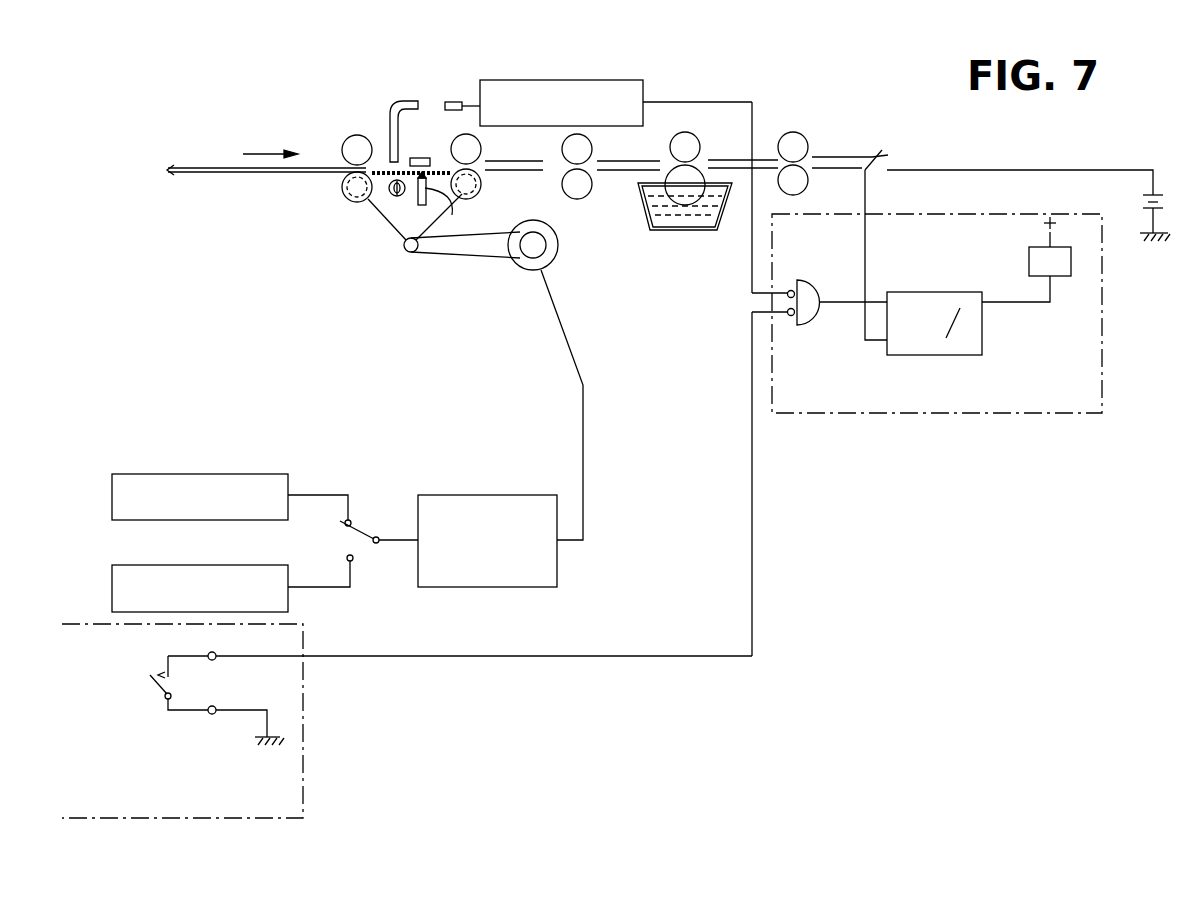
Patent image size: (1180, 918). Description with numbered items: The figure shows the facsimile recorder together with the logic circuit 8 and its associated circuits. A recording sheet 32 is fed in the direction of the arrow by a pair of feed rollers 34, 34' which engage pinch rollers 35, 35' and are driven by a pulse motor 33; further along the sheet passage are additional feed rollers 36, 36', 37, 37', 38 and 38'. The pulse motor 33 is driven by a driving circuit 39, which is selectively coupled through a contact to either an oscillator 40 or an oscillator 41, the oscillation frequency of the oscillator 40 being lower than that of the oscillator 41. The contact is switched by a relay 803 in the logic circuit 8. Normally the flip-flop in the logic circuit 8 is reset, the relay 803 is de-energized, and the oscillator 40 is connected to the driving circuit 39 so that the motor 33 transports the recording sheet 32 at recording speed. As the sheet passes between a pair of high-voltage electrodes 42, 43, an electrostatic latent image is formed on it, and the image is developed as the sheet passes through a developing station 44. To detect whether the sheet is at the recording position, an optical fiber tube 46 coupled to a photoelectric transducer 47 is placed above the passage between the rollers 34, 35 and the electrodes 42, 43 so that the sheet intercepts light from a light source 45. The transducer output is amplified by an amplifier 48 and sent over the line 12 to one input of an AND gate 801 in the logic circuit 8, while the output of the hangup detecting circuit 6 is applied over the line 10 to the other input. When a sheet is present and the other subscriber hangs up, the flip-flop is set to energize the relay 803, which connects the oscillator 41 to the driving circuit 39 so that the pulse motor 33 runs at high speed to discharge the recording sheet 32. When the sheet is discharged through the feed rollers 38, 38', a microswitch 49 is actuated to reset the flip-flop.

The hangup detecting circuit 6 is at (303, 675).
The logic circuit 8 is at (966, 313).
The line 10 is at (752, 497).
The line 12 is at (752, 283).
The recording sheet 32 is at (200, 168).
The pulse motor 33 is at (556, 258).
The feed roller 34 is at (323, 189).
The feed roller 34' is at (495, 190).
The pinch roller 35 is at (346, 128).
The pinch roller 35' is at (499, 145).
The feed roller 36 is at (607, 146).
The feed roller 36' is at (583, 212).
The feed roller 37 is at (711, 143).
The feed roller 37' is at (652, 191).
The feed roller 38 is at (791, 126).
The feed roller 38' is at (823, 193).
The driving circuit 39 is at (487, 495).
The oscillator 40 is at (248, 474).
The oscillator 41 is at (290, 574).
The electrode 42 is at (422, 158).
The electrode 43 is at (449, 214).
The developing station 44 is at (675, 222).
The light source 45 is at (380, 222).
The optical fiber tube 46 is at (396, 100).
The photoelectric transducer 47 is at (449, 102).
The amplifier 48 is at (648, 90).
The microswitch 49 is at (880, 152).
The AND gate 801 is at (805, 282).
The relay 803 is at (1029, 262).